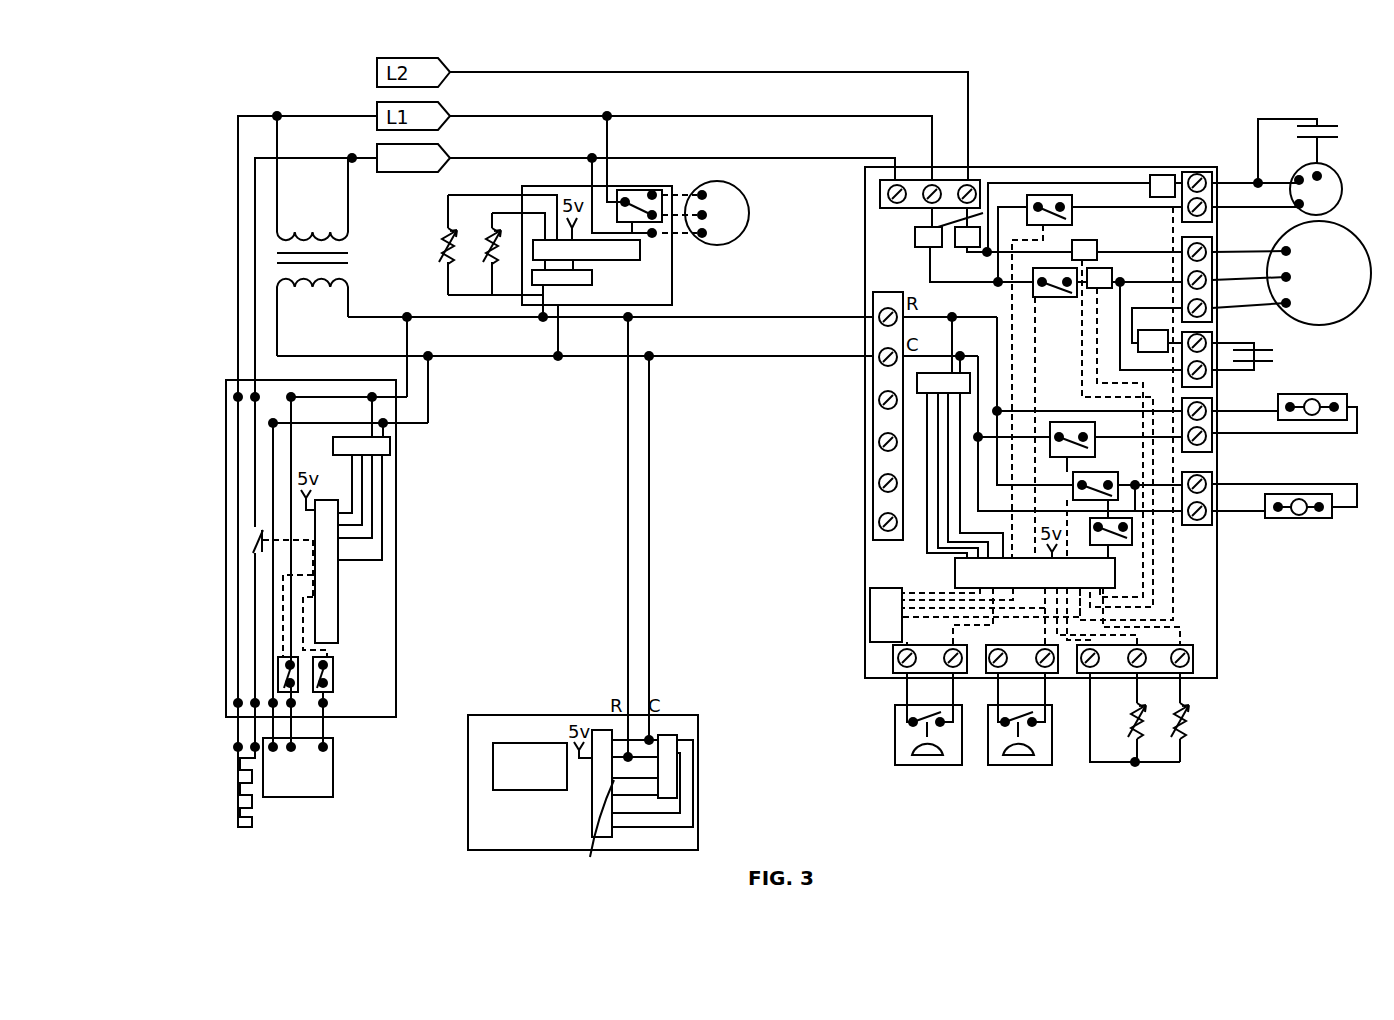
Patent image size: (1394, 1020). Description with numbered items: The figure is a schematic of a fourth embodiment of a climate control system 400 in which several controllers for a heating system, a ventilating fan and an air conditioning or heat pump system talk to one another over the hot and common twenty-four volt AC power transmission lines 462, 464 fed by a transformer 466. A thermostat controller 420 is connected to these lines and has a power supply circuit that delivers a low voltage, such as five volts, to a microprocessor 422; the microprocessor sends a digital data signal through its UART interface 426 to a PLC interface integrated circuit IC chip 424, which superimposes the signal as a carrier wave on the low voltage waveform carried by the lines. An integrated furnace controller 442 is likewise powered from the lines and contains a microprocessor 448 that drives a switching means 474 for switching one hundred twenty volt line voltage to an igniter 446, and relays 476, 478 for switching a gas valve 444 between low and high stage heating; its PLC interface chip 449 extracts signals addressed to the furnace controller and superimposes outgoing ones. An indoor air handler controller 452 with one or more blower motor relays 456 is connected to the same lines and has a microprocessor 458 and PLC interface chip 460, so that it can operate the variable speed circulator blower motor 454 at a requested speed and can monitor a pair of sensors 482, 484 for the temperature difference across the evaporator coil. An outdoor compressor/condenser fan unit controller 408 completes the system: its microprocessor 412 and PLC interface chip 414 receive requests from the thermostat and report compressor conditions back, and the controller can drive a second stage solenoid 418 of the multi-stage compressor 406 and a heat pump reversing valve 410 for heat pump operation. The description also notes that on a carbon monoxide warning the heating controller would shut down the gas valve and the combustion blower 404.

The climate control system 400 is at (829, 778).
The combustion blower 404 is at (1335, 172).
The multi-stage compressor 406 is at (1340, 232).
The outdoor compressor/condenser fan unit controller 408 is at (1217, 655).
The heat pump reversing valve 410 is at (1273, 518).
The microprocessor 412 is at (963, 553).
The PLC interface integrated circuit IC chip 414 is at (917, 383).
The second stage solenoid 418 is at (1295, 394).
The thermostat controller 420 is at (467, 770).
The microprocessor 422 is at (592, 822).
The PLC interface integrated circuit IC chip 424 is at (677, 735).
The UART interface 426 is at (600, 833).
The integrated furnace controller 442 is at (396, 547).
The gas valve 444 is at (297, 798).
The igniter 446 is at (250, 827).
The microprocessor 448 is at (340, 582).
The PLC interface integrated circuit IC chip 449 is at (390, 445).
The indoor air handler controller 452 is at (670, 188).
The variable speed circulator blower motor 454 is at (715, 183).
The variable speed circulator blower motor relays 456 is at (638, 192).
The microprocessor 458 is at (640, 252).
The PLC interface integrated circuit IC chip 460 is at (592, 278).
The power transmission line 462 is at (760, 318).
The power transmission line 464 is at (802, 357).
The transformer 466 is at (280, 290).
The switching means 474 is at (258, 533).
The relay 476 is at (280, 662).
The relay 478 is at (333, 673).
The sensor 482 is at (442, 236).
The sensor 484 is at (483, 223).